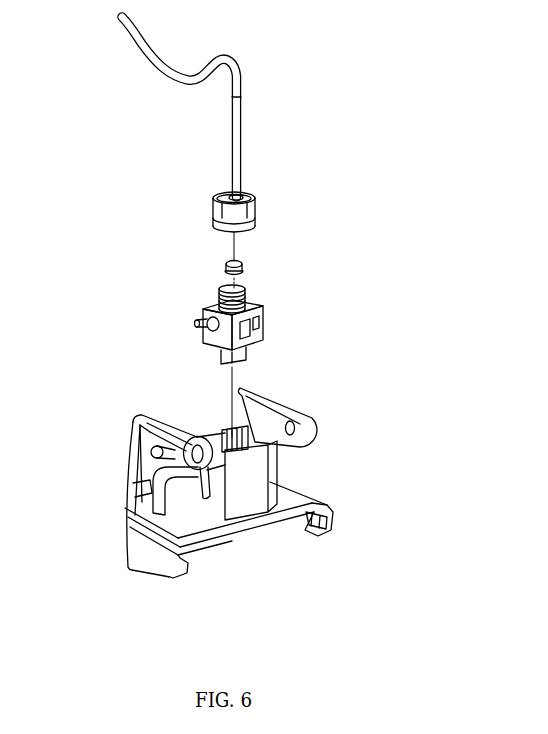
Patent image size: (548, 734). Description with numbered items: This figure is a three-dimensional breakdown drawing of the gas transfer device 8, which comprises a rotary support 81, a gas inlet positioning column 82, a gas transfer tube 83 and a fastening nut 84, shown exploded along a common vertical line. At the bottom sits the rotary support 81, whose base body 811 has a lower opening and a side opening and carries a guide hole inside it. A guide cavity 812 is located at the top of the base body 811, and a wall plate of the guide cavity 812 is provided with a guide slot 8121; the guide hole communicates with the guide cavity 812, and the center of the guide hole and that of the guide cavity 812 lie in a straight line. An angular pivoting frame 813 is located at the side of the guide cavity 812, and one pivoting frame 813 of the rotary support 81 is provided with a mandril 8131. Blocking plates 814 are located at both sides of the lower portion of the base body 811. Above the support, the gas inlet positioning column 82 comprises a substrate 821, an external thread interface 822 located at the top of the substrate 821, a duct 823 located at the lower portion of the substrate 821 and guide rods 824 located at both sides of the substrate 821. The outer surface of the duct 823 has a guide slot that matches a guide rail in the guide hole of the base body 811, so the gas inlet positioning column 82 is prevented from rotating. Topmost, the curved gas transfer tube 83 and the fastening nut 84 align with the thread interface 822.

The gas transfer device 8 is at (330, 358).
The rotary support 81 is at (327, 468).
The base body 811 is at (178, 527).
The guide cavity 812 is at (245, 493).
The angular pivoting frame 813 is at (158, 413).
The mandril 8131 is at (150, 450).
The guide slot 8121 is at (251, 440).
The blocking plates 814 is at (322, 535).
The gas inlet positioning column 82 is at (234, 332).
The substrate 821 is at (209, 306).
The external thread interface 822 is at (244, 289).
The duct 823 is at (222, 357).
The guide rods 824 is at (196, 323).
The gas transfer tube 83 is at (228, 152).
The fastening nut 84 is at (218, 216).